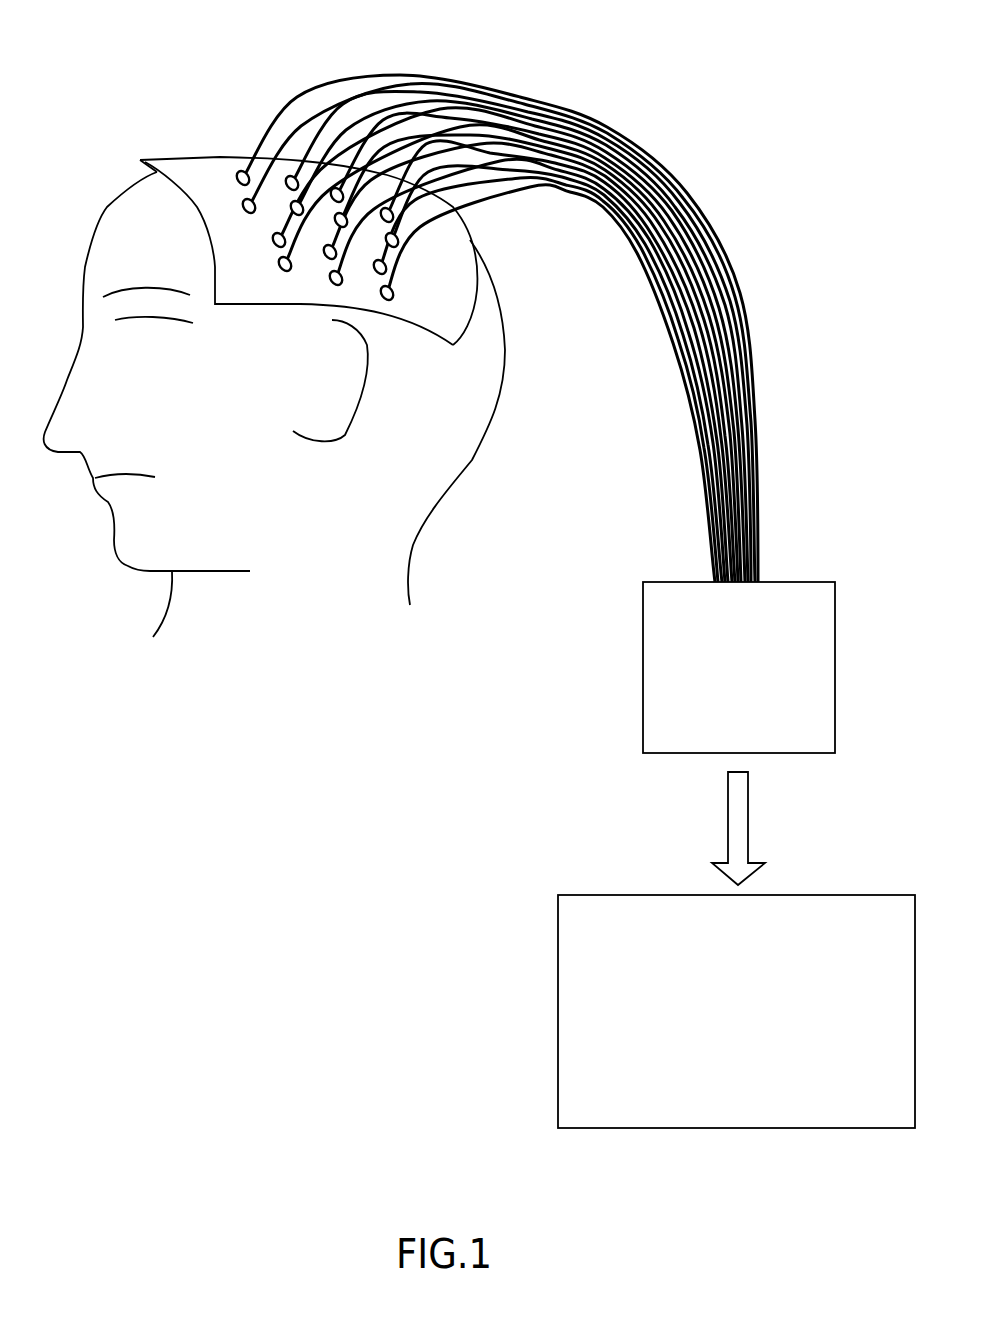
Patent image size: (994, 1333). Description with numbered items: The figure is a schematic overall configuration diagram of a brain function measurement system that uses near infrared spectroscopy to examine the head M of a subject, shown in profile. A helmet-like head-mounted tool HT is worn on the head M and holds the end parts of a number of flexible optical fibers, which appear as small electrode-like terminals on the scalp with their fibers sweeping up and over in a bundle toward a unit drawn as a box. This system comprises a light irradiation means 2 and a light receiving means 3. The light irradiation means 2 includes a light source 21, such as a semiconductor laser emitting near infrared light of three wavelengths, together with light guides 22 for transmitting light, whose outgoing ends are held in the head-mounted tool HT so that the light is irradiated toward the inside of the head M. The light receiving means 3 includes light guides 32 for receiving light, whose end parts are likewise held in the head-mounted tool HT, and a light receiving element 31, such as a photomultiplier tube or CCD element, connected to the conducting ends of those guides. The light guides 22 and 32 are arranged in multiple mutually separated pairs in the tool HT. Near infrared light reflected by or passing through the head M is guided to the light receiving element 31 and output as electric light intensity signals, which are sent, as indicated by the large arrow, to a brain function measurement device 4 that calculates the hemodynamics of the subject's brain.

The head of the subject M is at (266, 333).
The head-mounted tool HT is at (188, 155).
The light irradiation means 2 is at (550, 377).
The light receiving means 3 is at (550, 377).
The light guides for transmitting light 22 is at (496, 292).
The light guides for receiving light 32 is at (603, 117).
The light source 21 is at (703, 623).
The light receiving element 31 is at (675, 582).
The brain function measurement device 4 is at (557, 943).